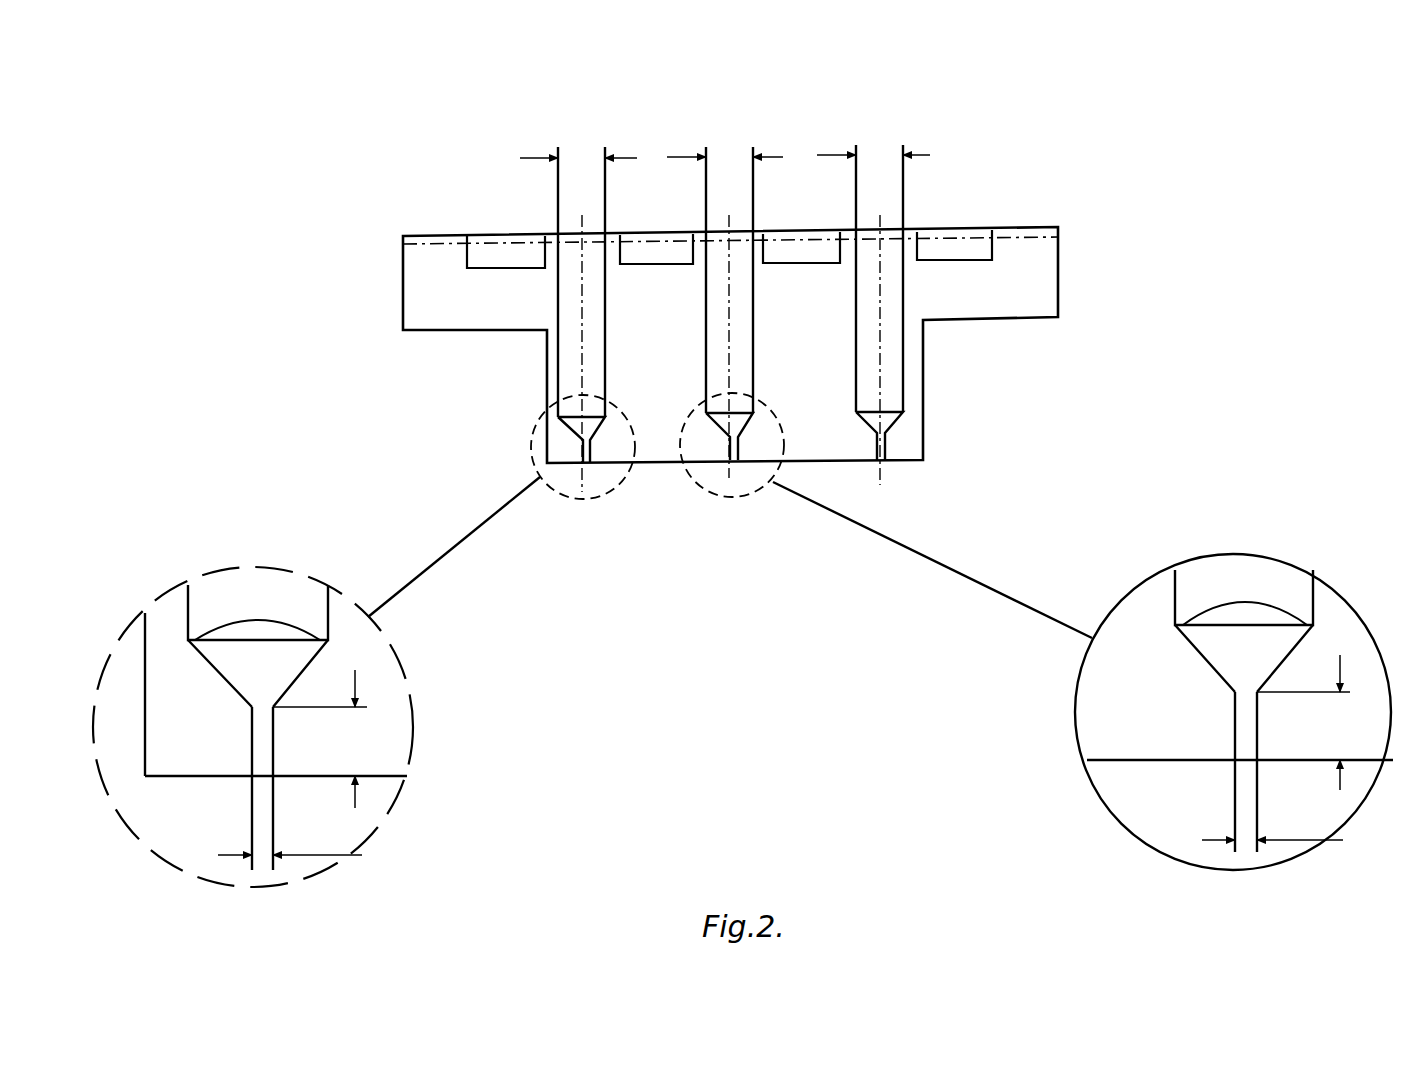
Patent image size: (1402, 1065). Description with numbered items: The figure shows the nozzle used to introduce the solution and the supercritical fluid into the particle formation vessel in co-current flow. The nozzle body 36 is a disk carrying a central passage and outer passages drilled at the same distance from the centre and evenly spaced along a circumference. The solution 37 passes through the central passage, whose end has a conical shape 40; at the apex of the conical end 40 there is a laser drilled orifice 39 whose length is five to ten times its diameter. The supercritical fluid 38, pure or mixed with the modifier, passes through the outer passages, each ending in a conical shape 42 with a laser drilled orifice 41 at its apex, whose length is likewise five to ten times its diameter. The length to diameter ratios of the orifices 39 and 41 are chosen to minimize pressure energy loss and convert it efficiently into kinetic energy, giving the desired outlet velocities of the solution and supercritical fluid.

The nozzle plate / housing block 36 is at (473, 293).
The solution 37 is at (743, 293).
The supercritical fluid 38 is at (598, 293).
The central orifice 39 is at (1243, 735).
The conical end 40 is at (1207, 653).
The outer orifice 41 is at (265, 752).
The conical end 42 is at (292, 665).